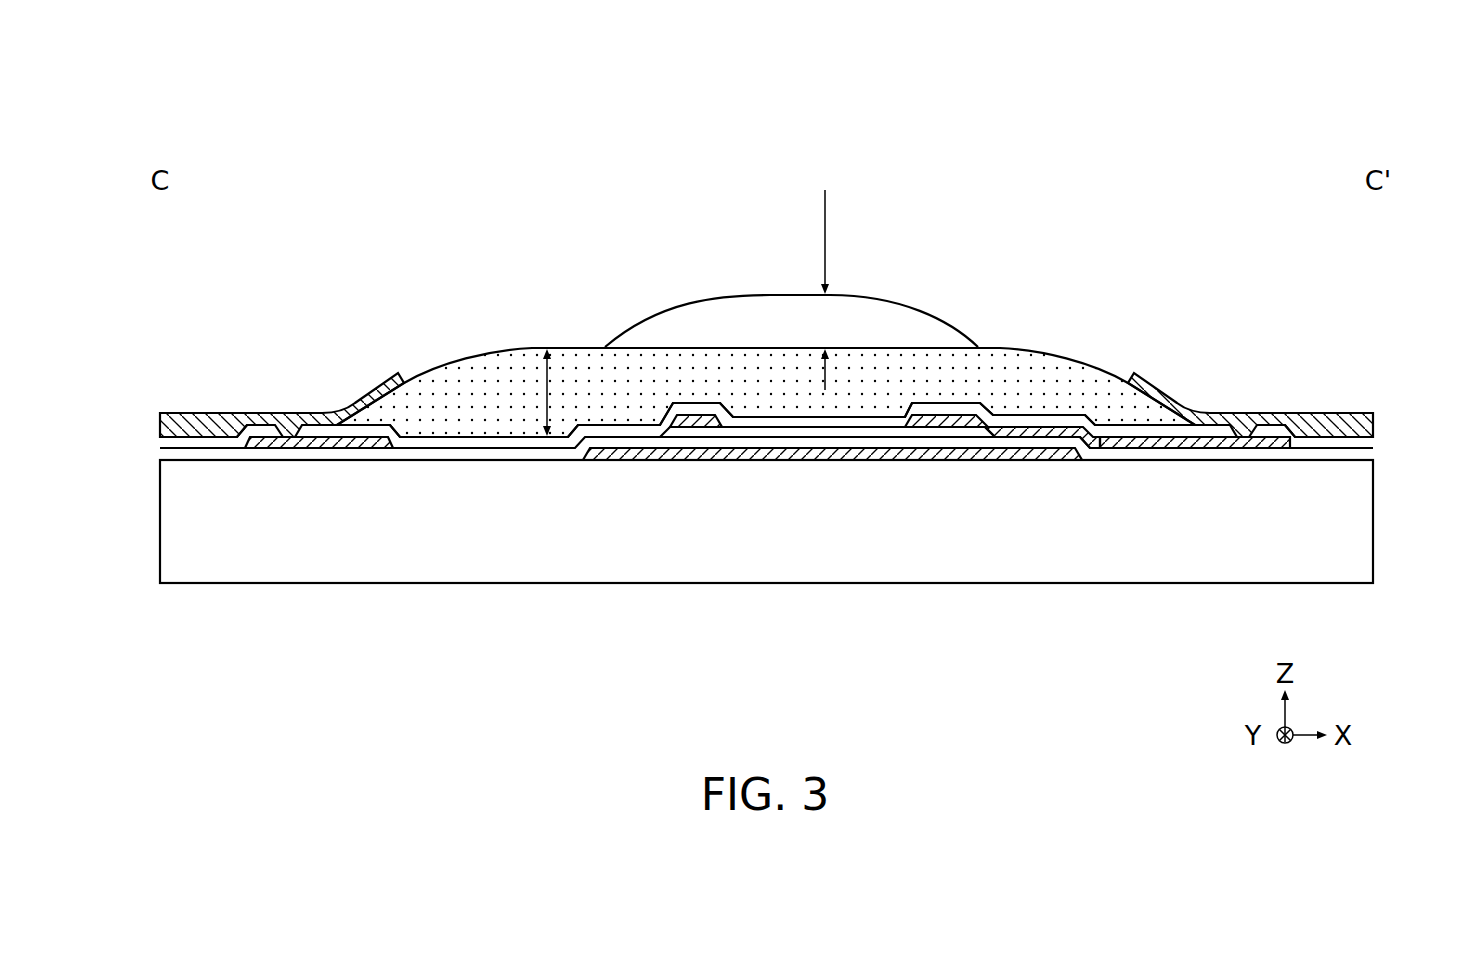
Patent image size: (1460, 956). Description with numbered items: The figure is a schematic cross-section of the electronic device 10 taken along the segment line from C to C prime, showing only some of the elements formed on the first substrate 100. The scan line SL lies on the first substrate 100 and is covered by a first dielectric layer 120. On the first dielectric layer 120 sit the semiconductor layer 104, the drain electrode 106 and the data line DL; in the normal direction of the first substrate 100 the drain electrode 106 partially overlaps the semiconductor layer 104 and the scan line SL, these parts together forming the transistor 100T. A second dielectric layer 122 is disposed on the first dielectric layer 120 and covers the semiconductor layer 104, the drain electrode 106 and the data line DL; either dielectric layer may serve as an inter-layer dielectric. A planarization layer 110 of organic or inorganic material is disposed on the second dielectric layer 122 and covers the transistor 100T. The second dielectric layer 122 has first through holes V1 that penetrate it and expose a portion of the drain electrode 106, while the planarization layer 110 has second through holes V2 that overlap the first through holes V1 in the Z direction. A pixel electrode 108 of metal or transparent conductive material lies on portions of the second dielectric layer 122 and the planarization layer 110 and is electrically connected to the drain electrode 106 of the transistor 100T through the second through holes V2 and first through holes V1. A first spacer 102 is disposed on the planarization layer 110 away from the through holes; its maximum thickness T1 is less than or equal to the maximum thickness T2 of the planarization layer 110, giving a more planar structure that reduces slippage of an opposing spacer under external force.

The electronic device 10 is at (286, 95).
The first substrate 100 is at (1357, 522).
The transistor 100T is at (752, 410).
The first spacer 102 is at (770, 312).
The semiconductor layer 104 is at (795, 432).
The drain electrode 106 is at (318, 442).
The pixel electrode 108 is at (178, 421).
The planarization layer 110 is at (1016, 360).
The first dielectric layer 120 is at (1357, 455).
The second dielectric layer 122 is at (1193, 433).
The data line DL is at (688, 412).
The scan line SL is at (869, 463).
The first through hole V1 is at (284, 422).
The second through hole V2 is at (226, 394).
The thickness of the first spacer T1 is at (880, 290).
The thickness of the planarization layer T2 is at (547, 392).